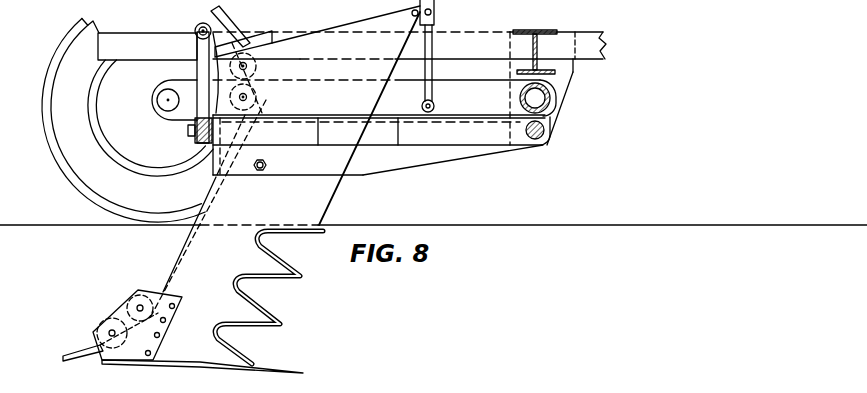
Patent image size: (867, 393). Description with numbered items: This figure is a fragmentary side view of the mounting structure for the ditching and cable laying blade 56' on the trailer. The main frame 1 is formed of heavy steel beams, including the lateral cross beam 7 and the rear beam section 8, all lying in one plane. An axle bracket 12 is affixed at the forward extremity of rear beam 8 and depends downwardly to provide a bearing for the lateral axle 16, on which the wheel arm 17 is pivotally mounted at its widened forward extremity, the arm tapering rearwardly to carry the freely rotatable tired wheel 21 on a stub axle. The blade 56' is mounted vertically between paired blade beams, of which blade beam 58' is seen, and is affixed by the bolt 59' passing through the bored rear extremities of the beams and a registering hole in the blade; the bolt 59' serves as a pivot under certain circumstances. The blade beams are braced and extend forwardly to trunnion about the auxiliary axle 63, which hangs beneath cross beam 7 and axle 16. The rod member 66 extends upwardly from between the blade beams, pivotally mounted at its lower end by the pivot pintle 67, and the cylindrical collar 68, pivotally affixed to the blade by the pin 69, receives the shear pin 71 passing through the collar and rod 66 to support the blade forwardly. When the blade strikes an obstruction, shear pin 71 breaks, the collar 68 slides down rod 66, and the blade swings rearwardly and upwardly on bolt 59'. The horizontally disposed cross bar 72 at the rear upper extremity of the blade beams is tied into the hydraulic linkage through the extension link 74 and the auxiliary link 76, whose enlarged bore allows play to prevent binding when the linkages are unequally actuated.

The main frame 1 is at (605, 46).
The lateral cross beam 7 is at (535, 33).
The rear beam section 8 is at (142, 37).
The axle bracket 12 is at (566, 73).
The lateral axle 16 is at (549, 100).
The wheel arm 17 is at (477, 93).
The tired wheel 21 is at (72, 167).
The ditching blade 56' is at (193, 236).
The blade beam 58' is at (378, 155).
The bolt 59' is at (279, 164).
The auxiliary axle 63 is at (546, 132).
The rod member 66 is at (433, 72).
The pivot pintle 67 is at (435, 108).
The cylindrical collar 68 is at (434, 4).
The pin 69 is at (413, 15).
The shear pin 71 is at (432, 15).
The cross bar 72 is at (196, 137).
The extension link 74 is at (207, 24).
The auxiliary link 76 is at (200, 54).